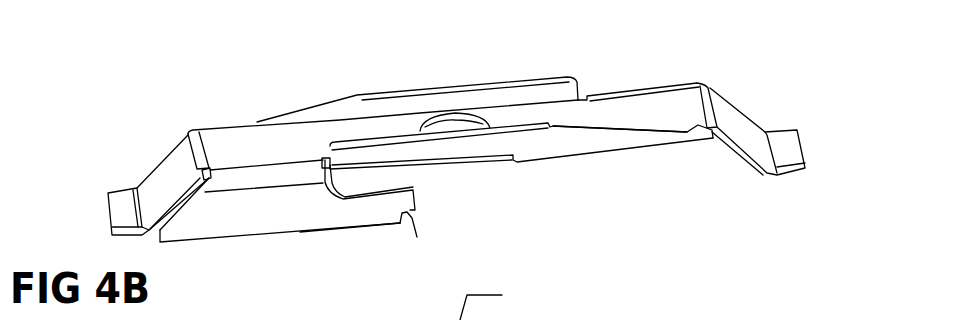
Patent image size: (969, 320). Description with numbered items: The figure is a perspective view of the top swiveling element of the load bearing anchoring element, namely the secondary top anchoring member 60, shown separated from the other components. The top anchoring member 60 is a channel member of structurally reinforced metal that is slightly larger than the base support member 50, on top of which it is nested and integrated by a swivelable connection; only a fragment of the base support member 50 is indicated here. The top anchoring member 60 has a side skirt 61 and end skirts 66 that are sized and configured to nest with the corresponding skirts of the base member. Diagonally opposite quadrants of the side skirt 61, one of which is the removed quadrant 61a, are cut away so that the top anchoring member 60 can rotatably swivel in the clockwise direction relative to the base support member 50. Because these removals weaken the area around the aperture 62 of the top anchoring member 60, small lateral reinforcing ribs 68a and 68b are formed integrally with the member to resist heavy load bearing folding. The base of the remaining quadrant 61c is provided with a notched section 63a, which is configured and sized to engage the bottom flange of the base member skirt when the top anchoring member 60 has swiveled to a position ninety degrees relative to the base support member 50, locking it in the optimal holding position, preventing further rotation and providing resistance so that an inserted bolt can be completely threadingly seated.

The base support member 50 is at (497, 301).
The secondary top anchoring member 60 is at (277, 101).
The side skirt 61 is at (308, 234).
The removed quadrant of the side skirt 61a is at (692, 146).
The remaining quadrant of the side skirt 61c is at (380, 214).
The aperture 62 is at (480, 111).
The notched section 63a is at (408, 214).
The end skirt 66 is at (157, 163).
The lateral reinforcing rib 68a is at (579, 83).
The lateral reinforcing rib 68b is at (517, 166).